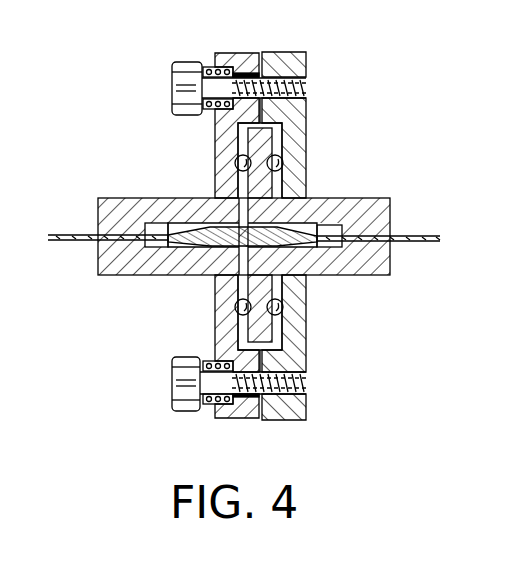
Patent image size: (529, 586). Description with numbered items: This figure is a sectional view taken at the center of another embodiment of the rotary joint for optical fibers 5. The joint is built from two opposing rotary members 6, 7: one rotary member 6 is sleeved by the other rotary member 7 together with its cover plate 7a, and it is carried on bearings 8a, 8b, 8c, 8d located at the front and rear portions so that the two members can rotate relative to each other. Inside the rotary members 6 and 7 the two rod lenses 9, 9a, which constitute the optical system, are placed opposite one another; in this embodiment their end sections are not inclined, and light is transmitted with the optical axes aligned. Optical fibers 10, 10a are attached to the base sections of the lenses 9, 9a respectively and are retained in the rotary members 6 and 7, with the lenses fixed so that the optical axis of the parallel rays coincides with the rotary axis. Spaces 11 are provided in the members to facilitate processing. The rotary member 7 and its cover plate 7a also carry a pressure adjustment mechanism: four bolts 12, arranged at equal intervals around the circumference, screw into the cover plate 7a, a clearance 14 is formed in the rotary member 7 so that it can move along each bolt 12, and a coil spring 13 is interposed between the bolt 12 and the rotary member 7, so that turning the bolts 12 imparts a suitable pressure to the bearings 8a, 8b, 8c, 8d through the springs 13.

The rotary joint for optical fibers 5 is at (104, 291).
The rotary member 6 is at (383, 208).
The rotary member 7 is at (97, 264).
The cover plate 7a is at (300, 114).
The bearing 8a is at (235, 163).
The bearing 8b is at (235, 307).
The bearing 8c is at (284, 163).
The bearing 8d is at (284, 307).
The rod lens 9 is at (196, 219).
The rod lens 9a is at (303, 222).
The optical fiber 10 is at (79, 233).
The optical fiber 10a is at (415, 237).
The space 11 is at (158, 223).
The bolt 12 is at (176, 88).
The coil spring 13 is at (205, 67).
The clearance 14 is at (244, 75).